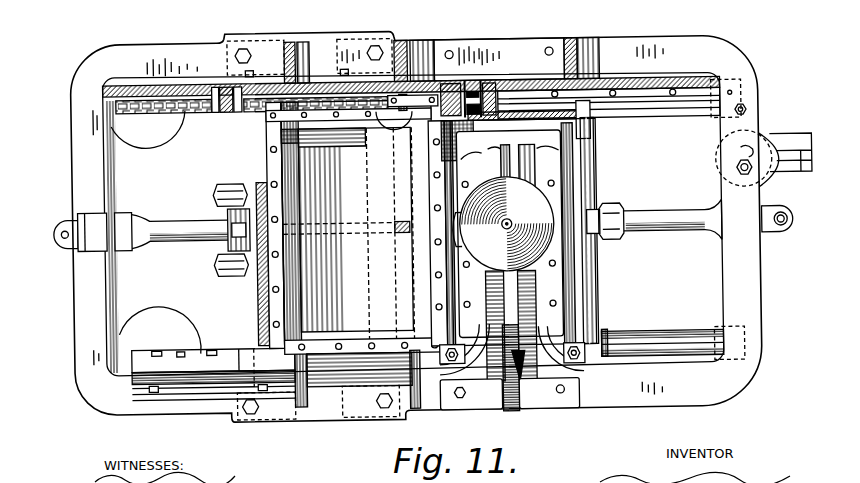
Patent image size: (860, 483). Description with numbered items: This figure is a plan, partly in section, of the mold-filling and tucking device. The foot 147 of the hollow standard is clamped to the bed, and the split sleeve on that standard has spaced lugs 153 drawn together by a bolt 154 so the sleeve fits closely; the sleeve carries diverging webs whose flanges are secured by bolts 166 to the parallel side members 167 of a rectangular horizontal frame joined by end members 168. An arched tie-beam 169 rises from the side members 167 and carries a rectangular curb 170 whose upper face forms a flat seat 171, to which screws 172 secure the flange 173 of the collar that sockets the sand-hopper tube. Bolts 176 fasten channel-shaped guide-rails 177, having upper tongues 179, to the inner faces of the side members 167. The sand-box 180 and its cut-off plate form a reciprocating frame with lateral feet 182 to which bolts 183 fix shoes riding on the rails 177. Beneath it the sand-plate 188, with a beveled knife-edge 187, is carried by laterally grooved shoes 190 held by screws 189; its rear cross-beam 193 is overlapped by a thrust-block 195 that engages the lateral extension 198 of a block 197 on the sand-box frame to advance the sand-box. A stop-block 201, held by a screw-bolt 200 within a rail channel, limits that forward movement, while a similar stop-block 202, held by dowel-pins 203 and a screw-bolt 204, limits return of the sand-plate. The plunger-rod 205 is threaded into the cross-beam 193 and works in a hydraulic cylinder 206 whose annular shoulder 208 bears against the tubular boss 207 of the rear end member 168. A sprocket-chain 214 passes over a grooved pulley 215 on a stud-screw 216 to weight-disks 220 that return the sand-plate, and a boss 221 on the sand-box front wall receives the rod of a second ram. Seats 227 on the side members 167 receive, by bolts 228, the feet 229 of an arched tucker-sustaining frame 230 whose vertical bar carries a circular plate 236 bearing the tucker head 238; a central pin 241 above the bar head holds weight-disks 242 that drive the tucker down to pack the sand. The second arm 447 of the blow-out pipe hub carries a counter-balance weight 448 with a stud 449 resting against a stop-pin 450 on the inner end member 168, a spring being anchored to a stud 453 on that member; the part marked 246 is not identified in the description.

The foot 147 is at (256, 279).
The spaced lugs 153 is at (219, 257).
The bolt 154 is at (218, 191).
The bolts 166 is at (255, 53).
The side members 167 is at (243, 31).
The end members 168 is at (416, 225).
The arched tie-beam 169 is at (263, 313).
The rectangular curb 170 is at (343, 134).
The flat seat 171 is at (348, 118).
The screws 172 is at (269, 225).
The flange 173 is at (260, 292).
The bolts 176 is at (155, 390).
The guide-rails 177 is at (107, 90).
The tongues 179 is at (610, 352).
The sand-box 180 is at (590, 130).
The lateral feet 182 is at (580, 362).
The bolts 183 is at (600, 347).
The knife-edge 187 is at (578, 246).
The sand-plate 188 is at (664, 117).
The screws 189 is at (556, 92).
The shoes 190 is at (652, 100).
The cross-beam 193 is at (396, 129).
The thrust-block 195 is at (413, 101).
The block 197 is at (520, 231).
The lateral extension 198 is at (452, 84).
The screw-bolt 200 is at (478, 81).
The stop-block 201 is at (515, 85).
The stop-block 202 is at (215, 108).
The dowel-pins 203 is at (242, 108).
The screw-bolt 204 is at (225, 88).
The plunger-rod 205 is at (345, 219).
The hydraulic cylinder 206 is at (189, 246).
The tubular boss 207 is at (72, 214).
The annular shoulder 208 is at (140, 211).
The sprocket-chain 214 is at (280, 120).
The pulley 215 is at (151, 111).
The stud-screw 216 is at (175, 111).
The weight-disks 220 is at (150, 150).
The boss 221 is at (599, 205).
The seats 227 is at (537, 50).
The bolts 228 is at (558, 396).
The feet 229 is at (471, 394).
The tucker-sustaining frame 230 is at (494, 263).
The circular plate 236 is at (511, 262).
The head 238 is at (575, 277).
The central pin 241 is at (512, 222).
The weight-disks 242 is at (500, 240).
The tab 246 is at (470, 232).
The second arm 447 is at (800, 170).
The counter-balance weight 448 is at (768, 142).
The stud 449 is at (743, 157).
The stop-pin 450 is at (745, 181).
The stud 453 is at (749, 116).